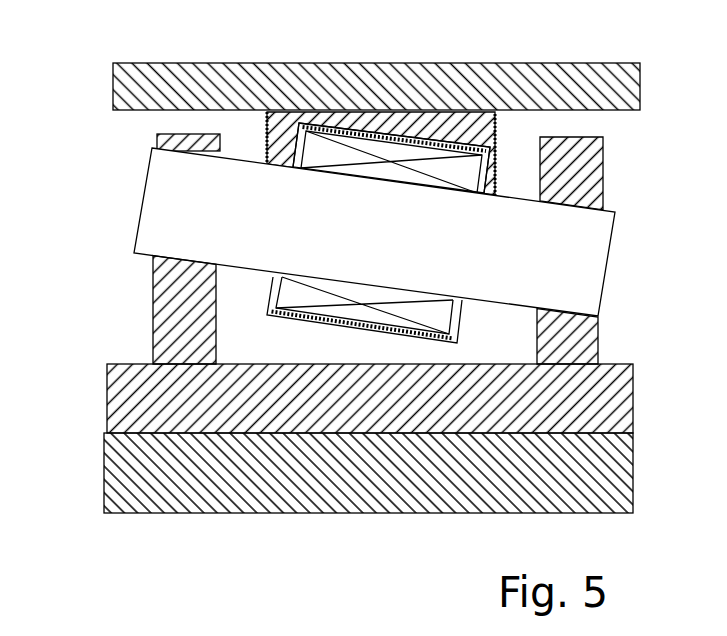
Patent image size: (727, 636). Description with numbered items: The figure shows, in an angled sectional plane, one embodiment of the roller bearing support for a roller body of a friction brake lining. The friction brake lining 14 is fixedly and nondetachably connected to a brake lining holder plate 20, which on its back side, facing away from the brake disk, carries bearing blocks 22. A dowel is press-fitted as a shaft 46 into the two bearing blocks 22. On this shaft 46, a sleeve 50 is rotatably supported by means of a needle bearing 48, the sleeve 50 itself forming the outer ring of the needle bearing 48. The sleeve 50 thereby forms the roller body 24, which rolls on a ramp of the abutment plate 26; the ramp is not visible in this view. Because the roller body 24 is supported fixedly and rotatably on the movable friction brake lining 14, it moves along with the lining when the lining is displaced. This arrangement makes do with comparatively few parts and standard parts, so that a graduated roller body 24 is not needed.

The friction brake lining 14 is at (133, 476).
The brake lining holder plate 20 is at (133, 388).
The bearing blocks 22 is at (170, 141).
The roller body 24 is at (381, 153).
The abutment plate 26 is at (150, 86).
The shaft 46 is at (182, 223).
The needle bearing 48 is at (373, 153).
The sleeve 50 is at (447, 117).